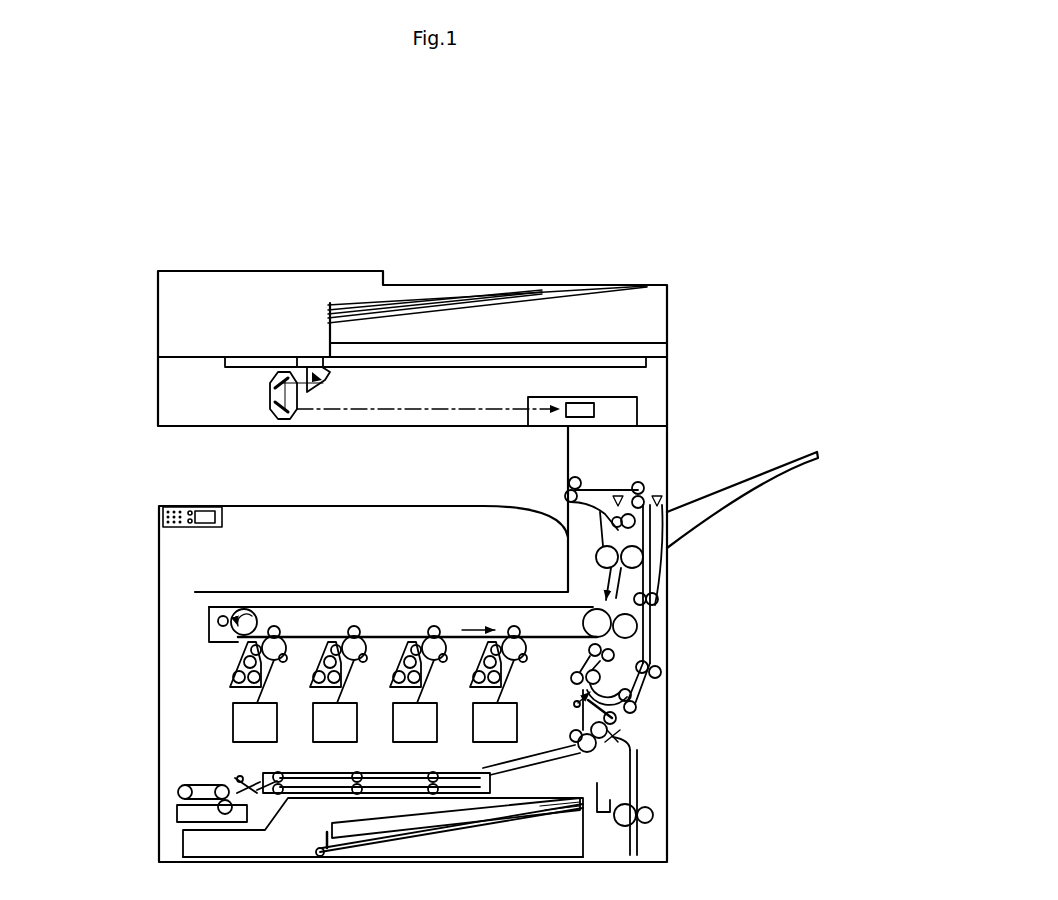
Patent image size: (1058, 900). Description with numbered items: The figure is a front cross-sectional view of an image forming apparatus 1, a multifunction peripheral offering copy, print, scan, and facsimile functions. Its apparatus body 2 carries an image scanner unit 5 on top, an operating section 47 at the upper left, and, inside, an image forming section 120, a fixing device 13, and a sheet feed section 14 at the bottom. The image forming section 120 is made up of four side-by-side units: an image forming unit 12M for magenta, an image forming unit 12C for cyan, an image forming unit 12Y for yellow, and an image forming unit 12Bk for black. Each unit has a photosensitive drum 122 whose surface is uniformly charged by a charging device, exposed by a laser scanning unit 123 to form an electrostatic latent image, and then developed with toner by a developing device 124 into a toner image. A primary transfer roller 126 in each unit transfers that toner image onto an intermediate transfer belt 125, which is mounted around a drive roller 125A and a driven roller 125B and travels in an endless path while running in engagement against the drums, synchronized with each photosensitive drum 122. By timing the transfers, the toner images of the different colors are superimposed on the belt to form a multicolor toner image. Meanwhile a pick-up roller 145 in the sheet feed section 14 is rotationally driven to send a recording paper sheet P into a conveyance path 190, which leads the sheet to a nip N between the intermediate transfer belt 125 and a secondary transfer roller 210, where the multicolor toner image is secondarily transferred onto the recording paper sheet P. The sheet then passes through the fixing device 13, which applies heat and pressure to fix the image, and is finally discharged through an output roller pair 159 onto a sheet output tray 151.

The image forming apparatus 1 is at (298, 203).
The apparatus body 2 is at (157, 528).
The image scanner unit 5 is at (670, 323).
The fixing device 13 is at (648, 558).
The sheet feed section 14 is at (157, 820).
The operating section 47 is at (180, 505).
The image forming section 120 is at (197, 640).
The photosensitive drum 122 is at (282, 636).
The laser scanning unit 123 is at (233, 723).
The developing device 124 is at (232, 678).
The intermediate transfer belt 125 is at (383, 607).
The drive roller 125A is at (585, 610).
The driven roller 125B is at (235, 607).
The primary transfer roller 126 is at (437, 607).
The image forming unit for magenta 12M is at (283, 712).
The image forming unit for cyan 12C is at (363, 712).
The image forming unit for yellow 12Y is at (437, 712).
The image forming unit for black 12Bk is at (520, 682).
The pick-up roller 145 is at (640, 766).
The sheet output tray 151 is at (430, 503).
The output roller pair 159 is at (575, 478).
The conveyance path 190 is at (613, 650).
The secondary transfer roller 210 is at (637, 626).
The nip N is at (645, 595).
The recording paper sheet P is at (338, 815).